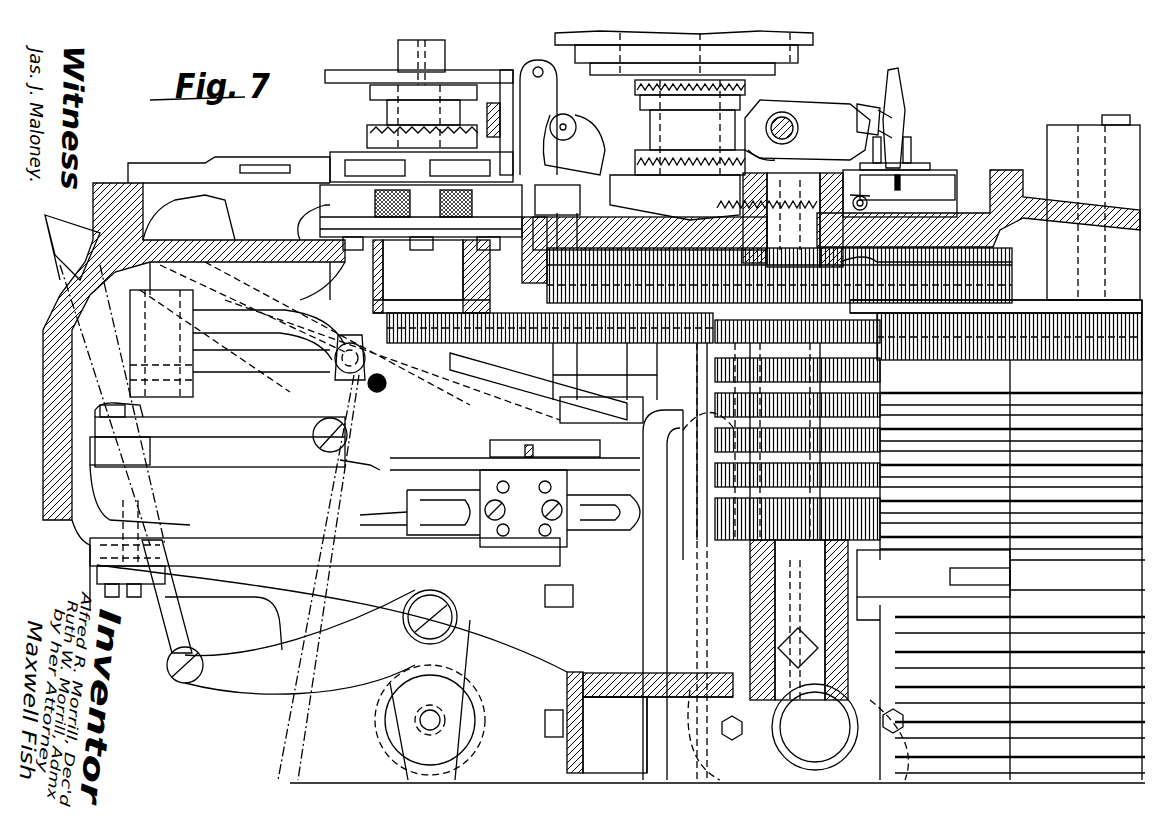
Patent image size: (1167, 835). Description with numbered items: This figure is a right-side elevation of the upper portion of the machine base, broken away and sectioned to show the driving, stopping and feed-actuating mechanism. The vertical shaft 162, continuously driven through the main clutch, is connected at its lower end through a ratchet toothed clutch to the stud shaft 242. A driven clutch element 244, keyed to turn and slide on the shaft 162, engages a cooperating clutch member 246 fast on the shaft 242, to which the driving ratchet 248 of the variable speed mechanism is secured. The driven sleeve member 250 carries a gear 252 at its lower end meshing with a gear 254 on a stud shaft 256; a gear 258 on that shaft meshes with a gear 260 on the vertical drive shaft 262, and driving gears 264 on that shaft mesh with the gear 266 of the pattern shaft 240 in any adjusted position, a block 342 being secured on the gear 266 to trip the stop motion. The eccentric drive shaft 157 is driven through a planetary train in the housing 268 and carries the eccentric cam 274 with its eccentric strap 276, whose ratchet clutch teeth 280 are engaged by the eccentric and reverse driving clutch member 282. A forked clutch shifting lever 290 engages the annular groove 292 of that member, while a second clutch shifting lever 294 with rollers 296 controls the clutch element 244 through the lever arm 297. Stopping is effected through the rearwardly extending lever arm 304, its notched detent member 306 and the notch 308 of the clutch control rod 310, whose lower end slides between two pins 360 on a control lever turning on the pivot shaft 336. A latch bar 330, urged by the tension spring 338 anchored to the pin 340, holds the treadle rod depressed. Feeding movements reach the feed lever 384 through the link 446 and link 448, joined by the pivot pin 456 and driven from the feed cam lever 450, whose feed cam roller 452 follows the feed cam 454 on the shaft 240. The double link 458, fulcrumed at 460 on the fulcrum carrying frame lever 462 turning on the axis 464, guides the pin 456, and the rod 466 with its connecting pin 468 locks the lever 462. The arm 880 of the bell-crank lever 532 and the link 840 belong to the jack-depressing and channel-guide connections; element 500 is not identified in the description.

The eccentric drive shaft 157 is at (690, 180).
The vertical shaft 162 is at (398, 48).
The pattern shaft 240 is at (997, 447).
The stud shaft 242 is at (375, 160).
The driven clutch element 244 is at (370, 95).
The cooperating clutch member 246 is at (387, 112).
The driving ratchet 248 is at (375, 200).
The sleeve member 250 is at (370, 298).
The gear 252 is at (415, 320).
The gear 254 is at (525, 343).
The stud shaft 256 is at (600, 195).
The gear 258 is at (547, 300).
The gear 260 is at (770, 262).
The vertical drive shaft 262 is at (865, 265).
The driving gears 264 is at (892, 375).
The gear 266 is at (965, 362).
The housing 268 is at (813, 38).
The eccentric cam 274 is at (775, 70).
The eccentric strap 276 is at (798, 54).
The clutch teeth 280 is at (640, 88).
The eccentric and reverse driving clutch member 282 is at (760, 115).
The clutch shifting lever 290 is at (790, 112).
The annular groove 292 is at (600, 150).
The clutch shifting lever 294 is at (520, 85).
The rollers 296 is at (493, 103).
The lever arm 297 is at (792, 159).
The lever arm 304 is at (866, 104).
The notched detent member 306 is at (890, 115).
The notch 308 is at (892, 130).
The clutch control rod 310 is at (898, 75).
The latch bar 330 is at (940, 182).
The pivot shaft 336 is at (925, 165).
The tension spring 338 is at (866, 185).
The pin 340 is at (867, 205).
The block 342 is at (1025, 313).
The pins 360 is at (905, 145).
The feed lever 384 is at (70, 238).
The link 446 is at (585, 510).
The link 448 is at (407, 520).
The feed cam lever 450 is at (890, 597).
The feed cam roller 452 is at (1010, 578).
The feed cam 454 is at (1105, 585).
The pivot pin 456 is at (500, 600).
The double link 458 is at (253, 470).
The fulcrum 460 is at (150, 417).
The fulcrum carrying frame lever 462 is at (225, 435).
The axis 464 is at (560, 410).
The rod 466 is at (340, 405).
The connecting pin 468 is at (420, 470).
The pulley 500 is at (345, 683).
The bell-crank lever 532 is at (340, 470).
The link 840 is at (180, 625).
The arm 880 is at (365, 345).